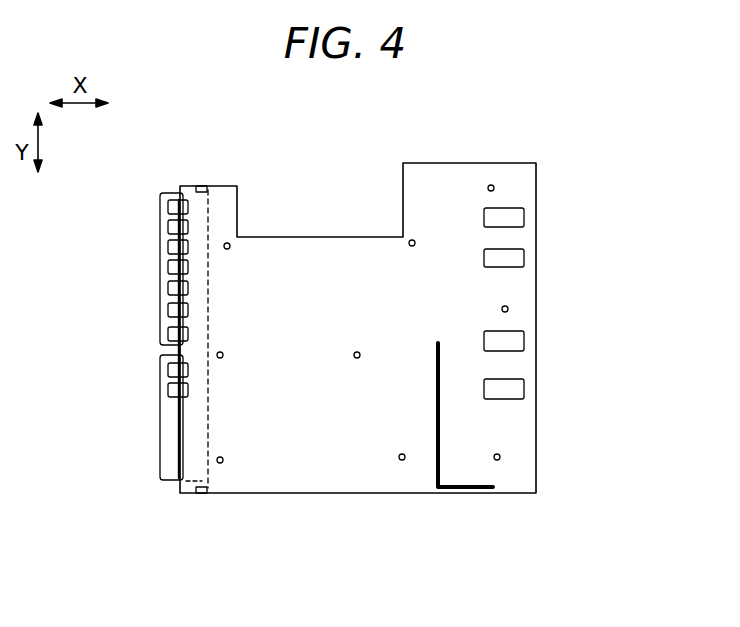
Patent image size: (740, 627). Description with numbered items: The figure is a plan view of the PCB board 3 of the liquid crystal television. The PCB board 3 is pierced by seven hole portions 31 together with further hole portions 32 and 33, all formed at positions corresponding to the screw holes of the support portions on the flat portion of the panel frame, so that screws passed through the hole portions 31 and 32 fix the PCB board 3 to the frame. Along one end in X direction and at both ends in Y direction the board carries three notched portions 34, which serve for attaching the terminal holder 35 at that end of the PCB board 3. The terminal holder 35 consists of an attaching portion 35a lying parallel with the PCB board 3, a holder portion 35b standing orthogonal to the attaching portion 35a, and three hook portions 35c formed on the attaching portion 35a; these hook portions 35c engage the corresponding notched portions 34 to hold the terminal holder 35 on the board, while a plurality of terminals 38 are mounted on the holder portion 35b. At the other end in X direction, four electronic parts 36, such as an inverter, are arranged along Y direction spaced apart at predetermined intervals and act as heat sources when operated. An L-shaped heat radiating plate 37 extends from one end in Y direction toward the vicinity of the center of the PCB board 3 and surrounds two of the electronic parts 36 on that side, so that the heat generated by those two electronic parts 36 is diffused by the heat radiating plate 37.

The PCB board 3 is at (543, 143).
The hole portions 31 is at (491, 185).
The hole portion 32 is at (229, 242).
The hole portion 33 is at (413, 240).
The notched portions 34 is at (196, 185).
The terminal holder 35 is at (150, 407).
The attaching portion 35a is at (160, 217).
The holder portion 35b is at (165, 437).
The hook portions 35c is at (201, 186).
The electronic parts 36 is at (518, 218).
The heat radiating plate 37 is at (435, 417).
The terminals 38 is at (170, 247).